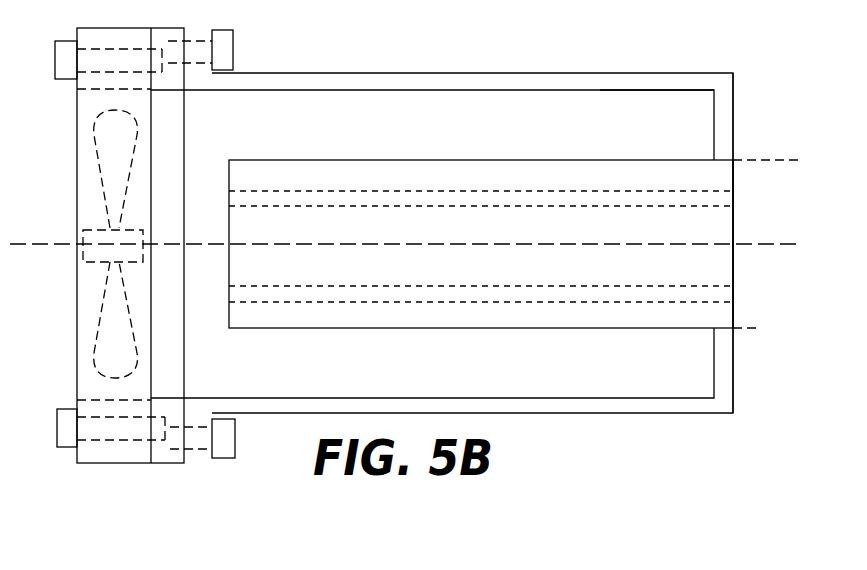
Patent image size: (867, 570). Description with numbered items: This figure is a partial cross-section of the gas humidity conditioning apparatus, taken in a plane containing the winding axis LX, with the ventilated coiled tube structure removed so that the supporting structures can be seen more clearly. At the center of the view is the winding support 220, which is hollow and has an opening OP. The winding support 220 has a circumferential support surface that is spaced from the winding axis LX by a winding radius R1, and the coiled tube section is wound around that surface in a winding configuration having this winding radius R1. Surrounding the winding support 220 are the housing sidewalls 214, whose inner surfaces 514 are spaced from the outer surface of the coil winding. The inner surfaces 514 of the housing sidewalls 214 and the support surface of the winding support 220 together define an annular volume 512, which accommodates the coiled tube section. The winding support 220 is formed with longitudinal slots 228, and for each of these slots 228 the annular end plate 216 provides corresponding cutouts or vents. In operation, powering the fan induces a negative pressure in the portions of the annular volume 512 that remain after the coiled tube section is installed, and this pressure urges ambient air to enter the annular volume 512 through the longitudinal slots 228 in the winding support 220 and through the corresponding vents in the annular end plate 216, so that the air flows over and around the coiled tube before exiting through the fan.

The housing sidewalls 214 is at (417, 73).
The annular end plate 216 is at (733, 365).
The winding support 220 is at (253, 158).
The longitudinal slots 228 is at (522, 198).
The annular volume 512 is at (460, 116).
The inner surfaces of the housing sidewalls 514 is at (612, 96).
The winding axis LX is at (24, 240).
The winding radius R1 is at (775, 163).
The opening OP is at (715, 259).